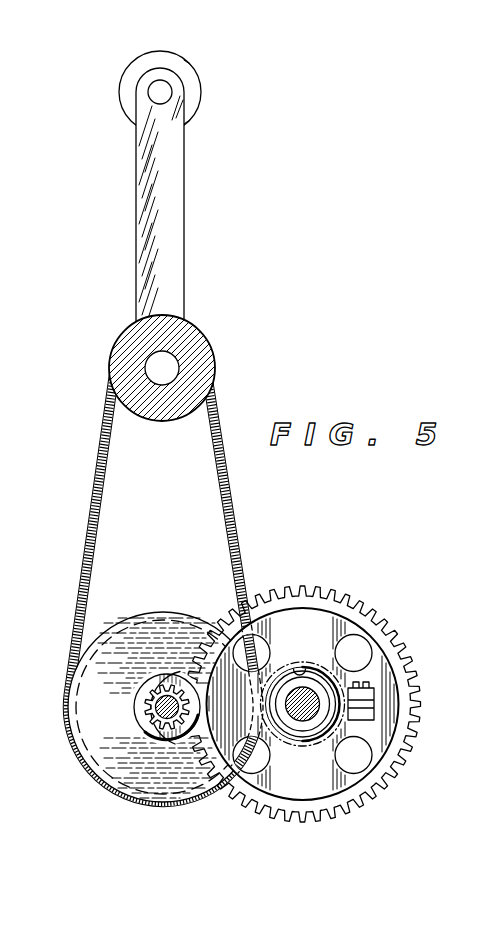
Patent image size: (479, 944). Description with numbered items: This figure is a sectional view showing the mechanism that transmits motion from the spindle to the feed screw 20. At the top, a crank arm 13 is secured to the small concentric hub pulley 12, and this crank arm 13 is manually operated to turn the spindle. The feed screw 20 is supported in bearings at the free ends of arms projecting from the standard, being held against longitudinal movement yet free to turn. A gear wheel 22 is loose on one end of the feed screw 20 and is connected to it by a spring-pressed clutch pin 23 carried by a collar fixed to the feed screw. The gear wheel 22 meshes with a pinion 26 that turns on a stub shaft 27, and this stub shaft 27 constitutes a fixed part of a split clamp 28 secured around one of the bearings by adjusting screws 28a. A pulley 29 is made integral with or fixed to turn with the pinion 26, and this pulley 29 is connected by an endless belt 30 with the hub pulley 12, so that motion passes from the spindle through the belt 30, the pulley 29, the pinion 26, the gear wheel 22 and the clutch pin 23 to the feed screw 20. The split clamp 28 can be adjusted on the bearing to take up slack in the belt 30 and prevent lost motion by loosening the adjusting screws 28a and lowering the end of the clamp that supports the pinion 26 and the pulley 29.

The hub pulley 12 is at (215, 362).
The crank arm 13 is at (170, 263).
The feed screw 20 is at (397, 725).
The gear wheel 22 is at (392, 655).
The spring-pressed clutch pin 23 is at (293, 660).
The pinion 26 is at (147, 718).
The stub shaft 27 is at (157, 708).
The split clamp 28 is at (197, 755).
The adjusting screws 28a is at (376, 700).
The pulley 29 is at (120, 763).
The endless belt 30 is at (98, 555).